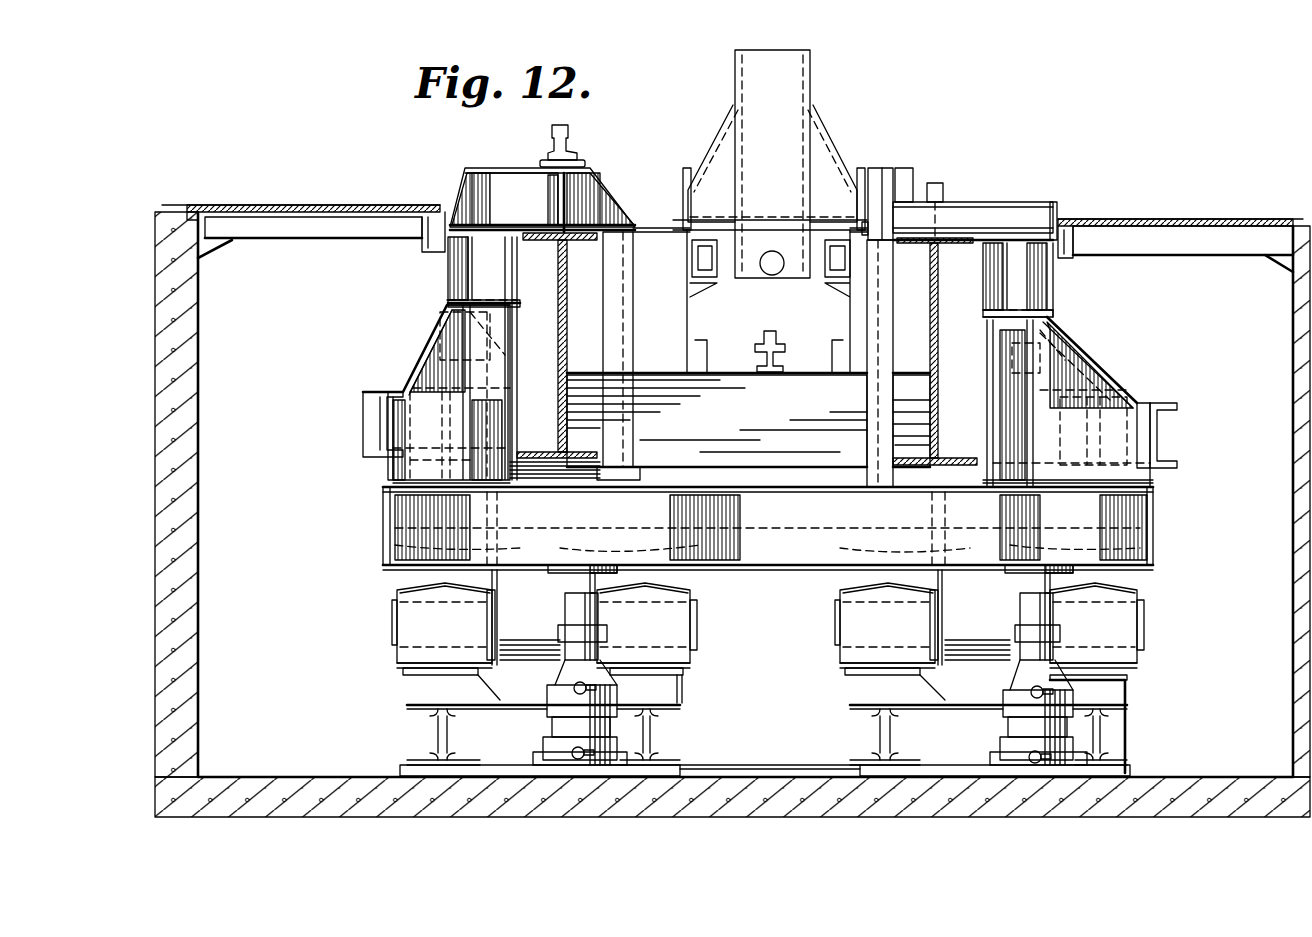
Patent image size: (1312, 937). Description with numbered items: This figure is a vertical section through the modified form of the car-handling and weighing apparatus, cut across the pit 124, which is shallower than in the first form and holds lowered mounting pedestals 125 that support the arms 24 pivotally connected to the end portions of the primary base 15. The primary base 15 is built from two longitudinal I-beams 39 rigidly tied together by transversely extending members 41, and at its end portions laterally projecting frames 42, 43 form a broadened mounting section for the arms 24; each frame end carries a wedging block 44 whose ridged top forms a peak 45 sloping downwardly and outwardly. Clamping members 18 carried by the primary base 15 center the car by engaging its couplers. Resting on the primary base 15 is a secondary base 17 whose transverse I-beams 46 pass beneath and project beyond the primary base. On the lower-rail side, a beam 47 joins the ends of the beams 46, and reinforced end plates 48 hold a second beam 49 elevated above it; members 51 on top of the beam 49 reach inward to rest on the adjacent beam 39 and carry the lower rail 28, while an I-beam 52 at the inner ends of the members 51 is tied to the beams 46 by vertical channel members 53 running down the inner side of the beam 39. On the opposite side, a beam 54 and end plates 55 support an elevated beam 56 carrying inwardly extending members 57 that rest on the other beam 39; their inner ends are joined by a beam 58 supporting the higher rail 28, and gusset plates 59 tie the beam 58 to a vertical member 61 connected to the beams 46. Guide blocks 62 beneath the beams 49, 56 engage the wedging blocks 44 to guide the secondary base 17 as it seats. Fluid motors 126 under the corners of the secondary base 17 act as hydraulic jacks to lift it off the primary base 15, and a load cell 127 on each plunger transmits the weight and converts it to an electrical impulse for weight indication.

The primary base 15 is at (736, 362).
The secondary base 17 is at (1080, 340).
The clamping member 18 is at (812, 95).
The arm 24 is at (515, 574).
The rail 28 is at (570, 148).
The I-beam 39 is at (567, 288).
The transversely extending member 41 is at (646, 372).
The laterally outwardly projecting frame 42 is at (1100, 368).
The laterally outwardly projecting frame 43 is at (436, 375).
The wedging block 44 is at (432, 341).
The peak 45 is at (443, 305).
The transverse I-beam 46 is at (758, 548).
The longitudinal beam 47 is at (1160, 437).
The end plate 48 is at (1075, 368).
The longitudinal beam 49 is at (1032, 276).
The laterally inwardly projecting member 51 is at (1018, 213).
The I-beam 52 is at (898, 182).
The vertical channel member 53 is at (880, 327).
The longitudinal beam 54 is at (380, 420).
The end plate 55 is at (432, 333).
The longitudinal beam 56 is at (458, 267).
The laterally inwardly extending member 57 is at (512, 183).
The longitudinal beam 58 is at (566, 208).
The gusset plate 59 is at (590, 196).
The vertical member 61 is at (620, 307).
The guide block 62 is at (560, 327).
The main pit 124 is at (1236, 774).
The mounting pedestal 125 is at (1128, 731).
The fluid motor 126 is at (558, 725).
The load cell 127 is at (576, 615).